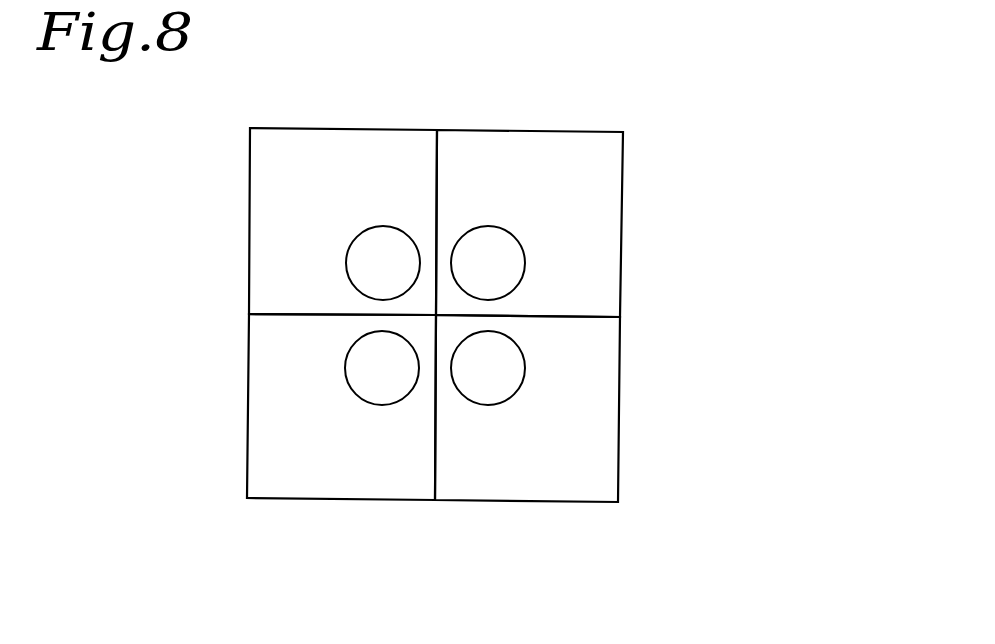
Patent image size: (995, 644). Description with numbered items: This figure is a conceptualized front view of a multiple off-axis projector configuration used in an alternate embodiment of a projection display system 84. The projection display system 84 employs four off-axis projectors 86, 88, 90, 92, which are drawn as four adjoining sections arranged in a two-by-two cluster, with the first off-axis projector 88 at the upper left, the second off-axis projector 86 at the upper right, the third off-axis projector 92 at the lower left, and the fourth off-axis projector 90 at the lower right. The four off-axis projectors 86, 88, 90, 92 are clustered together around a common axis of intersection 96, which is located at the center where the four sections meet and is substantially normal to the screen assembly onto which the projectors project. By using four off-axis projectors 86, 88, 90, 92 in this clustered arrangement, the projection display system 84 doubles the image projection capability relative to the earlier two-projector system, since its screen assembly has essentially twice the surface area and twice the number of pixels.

The projection display system 84 is at (537, 326).
The off-axis projector 86 is at (547, 130).
The off-axis projector 88 is at (371, 128).
The off-axis projector 90 is at (530, 503).
The off-axis projector 92 is at (283, 502).
The common axis of intersection 96 is at (436, 315).